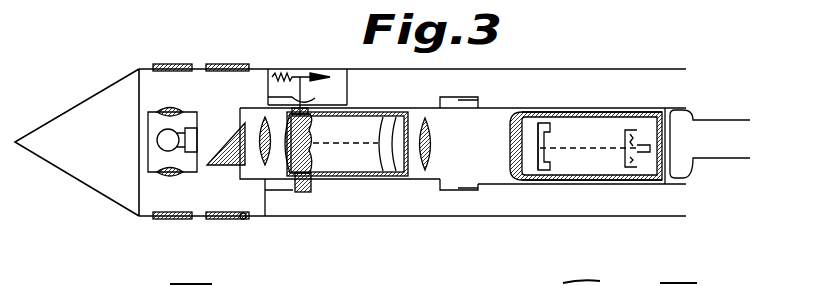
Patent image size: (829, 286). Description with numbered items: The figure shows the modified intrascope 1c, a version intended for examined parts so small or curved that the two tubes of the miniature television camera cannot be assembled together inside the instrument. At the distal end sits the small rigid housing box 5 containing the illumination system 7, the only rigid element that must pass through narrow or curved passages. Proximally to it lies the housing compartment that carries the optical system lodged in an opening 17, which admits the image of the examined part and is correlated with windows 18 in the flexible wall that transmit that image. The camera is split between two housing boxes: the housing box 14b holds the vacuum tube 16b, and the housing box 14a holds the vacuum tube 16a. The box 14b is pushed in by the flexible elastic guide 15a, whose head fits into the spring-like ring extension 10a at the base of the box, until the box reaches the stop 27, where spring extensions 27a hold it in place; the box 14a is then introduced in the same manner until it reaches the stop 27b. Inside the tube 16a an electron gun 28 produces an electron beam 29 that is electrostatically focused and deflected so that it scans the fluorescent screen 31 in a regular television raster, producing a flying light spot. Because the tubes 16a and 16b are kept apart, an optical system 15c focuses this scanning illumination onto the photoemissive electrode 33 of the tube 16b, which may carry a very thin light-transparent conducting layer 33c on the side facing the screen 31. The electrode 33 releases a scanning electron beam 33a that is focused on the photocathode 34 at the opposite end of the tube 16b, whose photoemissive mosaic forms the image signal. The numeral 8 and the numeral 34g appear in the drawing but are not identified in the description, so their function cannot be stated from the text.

The intrascope 1c is at (530, 69).
The opening 17 is at (175, 63).
The windows 18 is at (230, 63).
The housing box 5 is at (148, 112).
The illumination system 7 is at (148, 150).
The photocathode 34 is at (302, 180).
The stop 27 is at (268, 85).
The housing box 14b is at (350, 108).
The vacuum tube 16b is at (357, 180).
The stop 27b is at (440, 99).
The spring extensions 27a is at (478, 100).
The ring-like extension 10a is at (473, 97).
The photoemissive electrode 33 is at (393, 176).
The scanning electron beam 33a is at (336, 143).
The light transparent conducting layer 33c is at (403, 170).
The optical system 15c is at (440, 133).
The vacuum tube 16a is at (587, 112).
The housing box 14a is at (567, 112).
The chamber bottom wall 8 is at (559, 184).
The electron gun 28 is at (628, 127).
The electron beam 29 is at (577, 147).
The fluorescent screen 31 is at (538, 181).
The flexible elastic guide 15a is at (693, 132).
The numeral from adjacent figure 34g is at (128, 276).